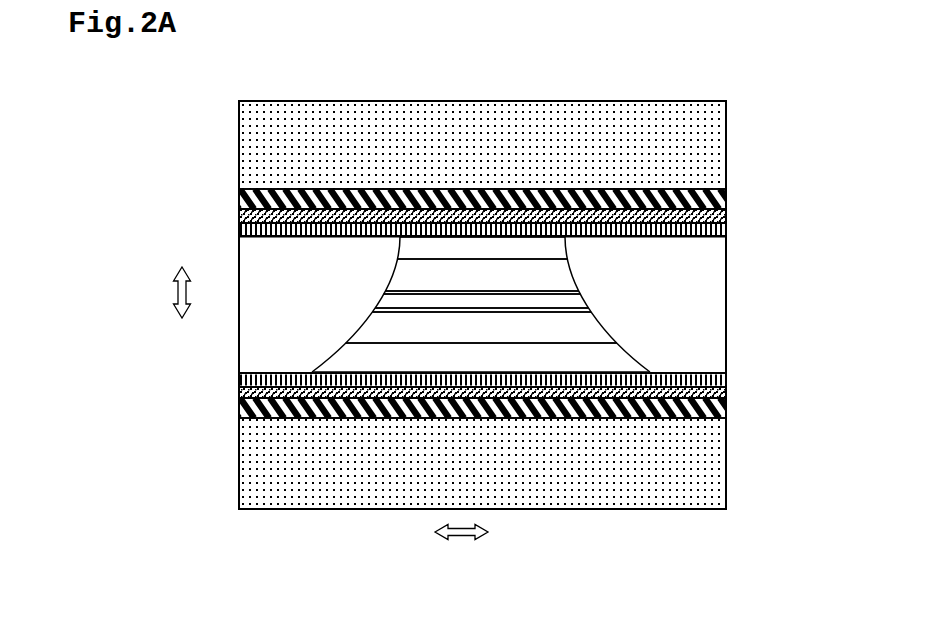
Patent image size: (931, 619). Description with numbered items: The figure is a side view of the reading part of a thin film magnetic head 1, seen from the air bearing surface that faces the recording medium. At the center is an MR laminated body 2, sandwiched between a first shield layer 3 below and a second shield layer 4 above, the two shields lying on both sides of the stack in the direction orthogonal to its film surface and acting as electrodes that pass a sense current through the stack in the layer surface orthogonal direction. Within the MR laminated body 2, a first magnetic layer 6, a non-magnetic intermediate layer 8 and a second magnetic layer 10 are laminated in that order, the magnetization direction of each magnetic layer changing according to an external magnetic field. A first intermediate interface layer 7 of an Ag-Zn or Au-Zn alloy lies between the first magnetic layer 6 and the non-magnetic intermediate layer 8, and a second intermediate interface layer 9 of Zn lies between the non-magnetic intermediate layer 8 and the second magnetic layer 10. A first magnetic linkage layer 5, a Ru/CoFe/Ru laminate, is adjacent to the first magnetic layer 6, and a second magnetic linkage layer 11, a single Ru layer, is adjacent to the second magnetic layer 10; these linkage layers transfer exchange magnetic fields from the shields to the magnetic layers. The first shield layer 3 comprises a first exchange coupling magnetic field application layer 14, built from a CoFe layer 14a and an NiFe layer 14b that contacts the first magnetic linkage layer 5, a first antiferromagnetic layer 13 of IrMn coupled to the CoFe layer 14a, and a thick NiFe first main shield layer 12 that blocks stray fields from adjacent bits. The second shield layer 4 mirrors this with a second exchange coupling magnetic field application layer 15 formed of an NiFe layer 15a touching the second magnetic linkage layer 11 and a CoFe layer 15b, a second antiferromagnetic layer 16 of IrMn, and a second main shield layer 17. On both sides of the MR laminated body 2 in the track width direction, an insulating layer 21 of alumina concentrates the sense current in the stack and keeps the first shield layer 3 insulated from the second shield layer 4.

The thin film magnetic head 1 is at (506, 74).
The MR laminated body 2 is at (773, 232).
The first shield layer 3 is at (121, 372).
The second shield layer 4 is at (121, 127).
The first magnetic linkage layer 5 is at (640, 358).
The first magnetic layer 6 is at (615, 335).
The first intermediate interface layer 7 is at (598, 308).
The non-magnetic intermediate layer 8 is at (595, 297).
The second intermediate interface layer 9 is at (588, 287).
The second magnetic layer 10 is at (578, 270).
The second magnetic linkage layer 11 is at (570, 250).
The first main shield layer 12 is at (240, 473).
The first antiferromagnetic layer 13 is at (240, 413).
The first exchange coupling magnetic field application layer 14 is at (161, 368).
The CoFe layer 14a is at (240, 392).
The NiFe layer 14b is at (240, 380).
The second exchange coupling magnetic field application layer 15 is at (161, 207).
The NiFe layer 15a is at (240, 231).
The CoFe layer 15b is at (240, 218).
The second antiferromagnetic layer 16 is at (240, 200).
The second main shield layer 17 is at (240, 145).
The insulating layer 21 is at (240, 355).